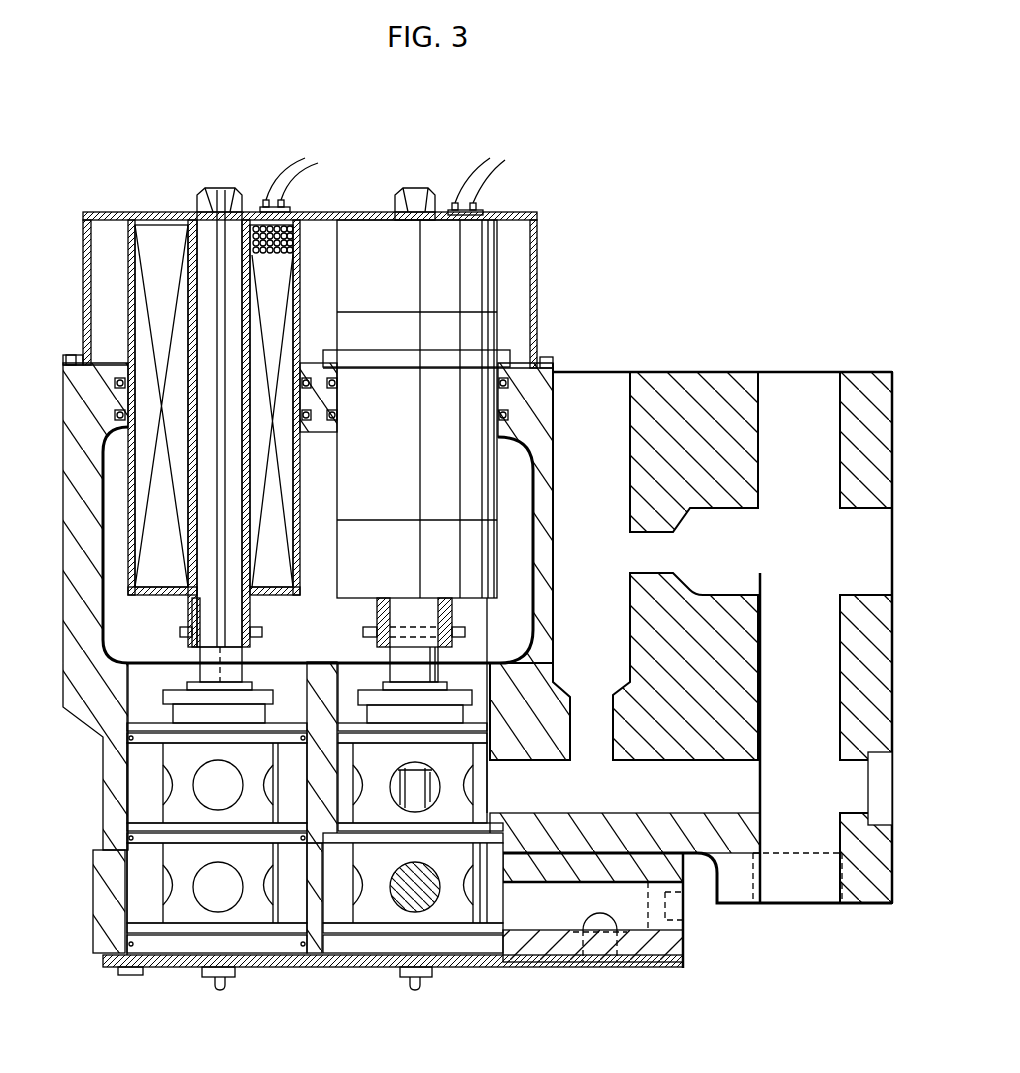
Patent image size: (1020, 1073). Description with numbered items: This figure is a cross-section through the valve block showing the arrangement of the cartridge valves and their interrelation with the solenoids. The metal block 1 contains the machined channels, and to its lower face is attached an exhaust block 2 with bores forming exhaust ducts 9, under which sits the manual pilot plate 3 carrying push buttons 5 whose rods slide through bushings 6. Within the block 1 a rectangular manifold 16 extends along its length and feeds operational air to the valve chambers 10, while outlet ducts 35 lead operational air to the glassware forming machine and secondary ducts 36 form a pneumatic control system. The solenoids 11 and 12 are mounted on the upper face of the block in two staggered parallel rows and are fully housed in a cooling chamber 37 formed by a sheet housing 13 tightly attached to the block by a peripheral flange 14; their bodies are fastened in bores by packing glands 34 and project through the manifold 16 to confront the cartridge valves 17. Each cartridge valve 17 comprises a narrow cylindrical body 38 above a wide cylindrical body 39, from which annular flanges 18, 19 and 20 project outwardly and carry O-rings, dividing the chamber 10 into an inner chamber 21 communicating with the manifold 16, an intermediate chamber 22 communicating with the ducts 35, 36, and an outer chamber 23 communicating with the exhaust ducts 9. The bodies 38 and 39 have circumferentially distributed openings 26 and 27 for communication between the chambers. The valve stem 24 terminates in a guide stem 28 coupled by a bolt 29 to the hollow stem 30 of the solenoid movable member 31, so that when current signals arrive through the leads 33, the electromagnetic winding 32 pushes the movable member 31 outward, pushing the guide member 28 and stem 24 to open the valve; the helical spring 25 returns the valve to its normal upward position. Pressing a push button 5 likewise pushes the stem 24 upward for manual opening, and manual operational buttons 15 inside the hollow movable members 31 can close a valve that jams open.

The metal block 1 is at (858, 898).
The exhaust block 2 is at (654, 950).
The manual pilot plate 3 is at (292, 960).
The push button 5 is at (222, 985).
The bushing 6 is at (235, 973).
The exhaust duct 9 is at (686, 963).
The valve chamber 10 is at (145, 897).
The solenoid 11 is at (360, 240).
The solenoid 12 is at (162, 212).
The sheet housing 13 is at (120, 212).
The peripheral flange 14 is at (68, 372).
The manual operational button 15 is at (222, 188).
The manifold 16 is at (118, 578).
The cartridge valve 17 is at (197, 935).
The annular flange 18 is at (280, 740).
The intermediate flange 19 is at (280, 845).
The annular flange 20 is at (190, 940).
The inner chamber 21 is at (475, 685).
The intermediate chamber 22 is at (488, 795).
The outer chamber 23 is at (501, 876).
The stem 24 is at (400, 813).
The helical spring 25 is at (428, 900).
The openings 26 is at (205, 788).
The openings 27 is at (200, 897).
The guide stem 28 is at (200, 670).
The bolt 29 is at (262, 630).
The hollow stem 30 is at (188, 627).
The movable member 31 is at (232, 403).
The electromagnetic winding 32 is at (258, 207).
The leads 33 is at (297, 162).
The packing gland 34 is at (115, 415).
The outlet duct 35 is at (697, 800).
The secondary duct 36 is at (608, 385).
The chamber 37 is at (118, 272).
The narrow cylindrical body 38 is at (175, 758).
The wide cylindrical body 39 is at (170, 860).